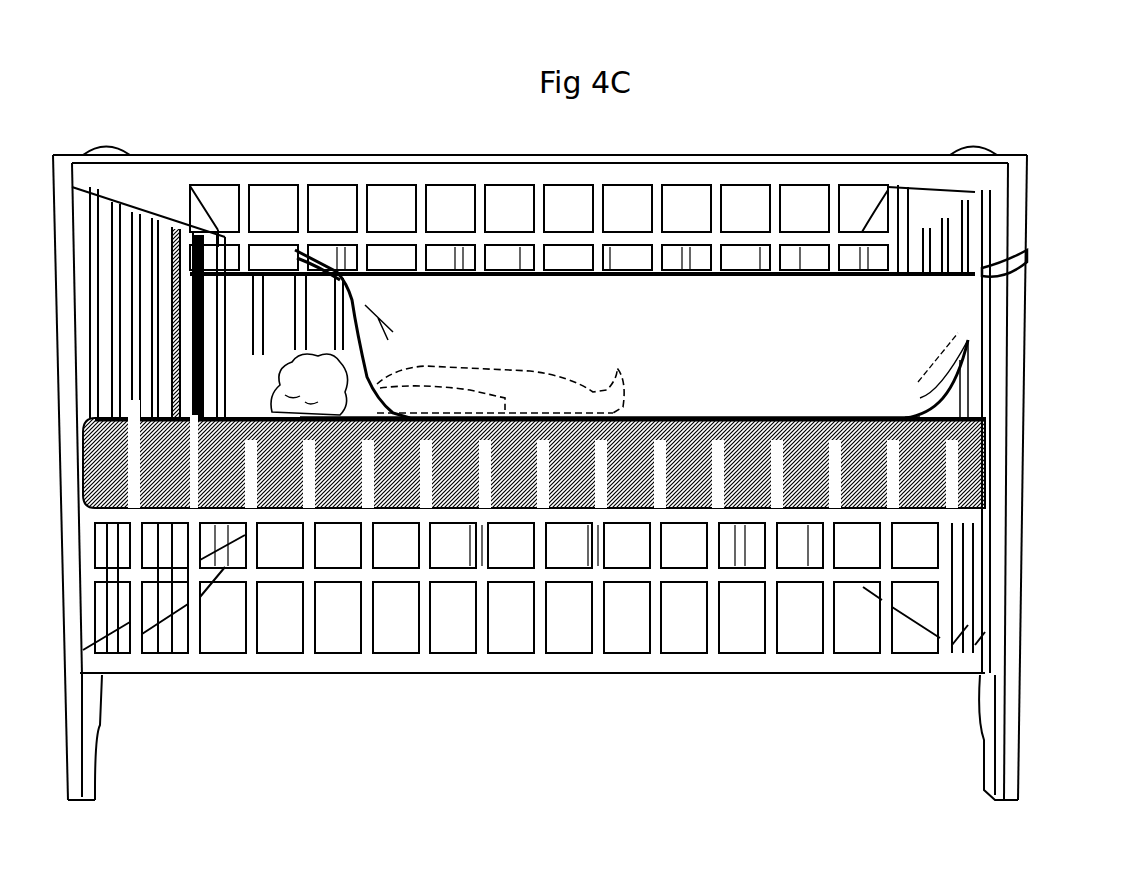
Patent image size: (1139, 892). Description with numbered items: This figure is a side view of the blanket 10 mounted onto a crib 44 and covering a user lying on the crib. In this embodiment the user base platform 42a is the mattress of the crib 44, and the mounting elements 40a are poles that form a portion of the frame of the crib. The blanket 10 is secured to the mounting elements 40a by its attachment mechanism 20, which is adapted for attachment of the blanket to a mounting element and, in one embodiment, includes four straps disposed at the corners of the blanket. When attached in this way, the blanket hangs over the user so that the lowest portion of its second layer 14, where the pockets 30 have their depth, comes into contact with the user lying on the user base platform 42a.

The crib 44 is at (1000, 176).
The mounting elements 40a is at (955, 240).
The attachment mechanism 20 is at (1030, 264).
The blanket 10 is at (905, 315).
The second layer 14 is at (920, 398).
The pockets 30 is at (738, 358).
The user base platform 42a is at (968, 472).